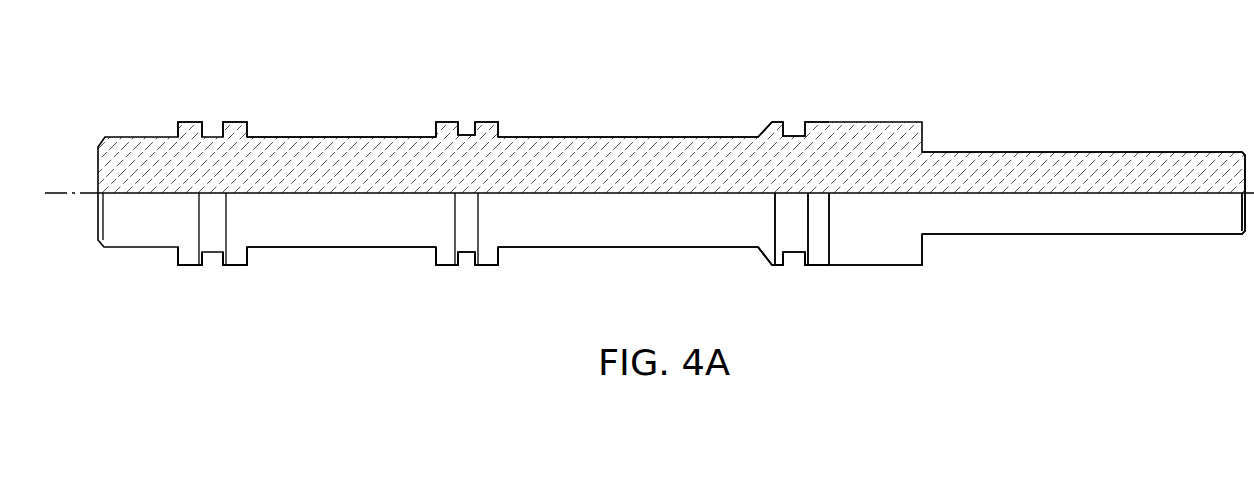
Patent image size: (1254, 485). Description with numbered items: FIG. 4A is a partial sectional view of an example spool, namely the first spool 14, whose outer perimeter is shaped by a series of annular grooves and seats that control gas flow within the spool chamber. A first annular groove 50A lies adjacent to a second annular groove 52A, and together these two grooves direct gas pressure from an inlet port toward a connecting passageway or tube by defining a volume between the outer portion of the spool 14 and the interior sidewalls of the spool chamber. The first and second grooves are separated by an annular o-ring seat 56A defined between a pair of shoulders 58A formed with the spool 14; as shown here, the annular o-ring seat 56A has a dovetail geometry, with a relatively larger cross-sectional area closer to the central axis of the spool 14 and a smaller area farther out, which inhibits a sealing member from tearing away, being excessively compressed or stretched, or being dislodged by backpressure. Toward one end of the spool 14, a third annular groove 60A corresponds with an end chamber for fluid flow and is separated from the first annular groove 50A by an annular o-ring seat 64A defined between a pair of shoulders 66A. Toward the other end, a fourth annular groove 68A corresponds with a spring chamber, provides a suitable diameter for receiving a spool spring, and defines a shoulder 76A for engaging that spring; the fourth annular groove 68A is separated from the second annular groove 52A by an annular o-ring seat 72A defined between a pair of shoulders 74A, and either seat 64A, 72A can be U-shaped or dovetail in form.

The first spool 14 is at (117, 162).
The first annular groove 50A is at (362, 114).
The second annular groove 52A is at (630, 116).
The annular o-ring seat 56A is at (467, 114).
The shoulders 58A is at (443, 262).
The third annular groove 60A is at (150, 114).
The annular o-ring seat 64A is at (213, 114).
The shoulders 66A is at (190, 262).
The fourth annular groove 68A is at (1065, 130).
The annular o-ring seat 72A is at (796, 114).
The shoulders 74A is at (770, 252).
The shoulder 76A is at (934, 258).